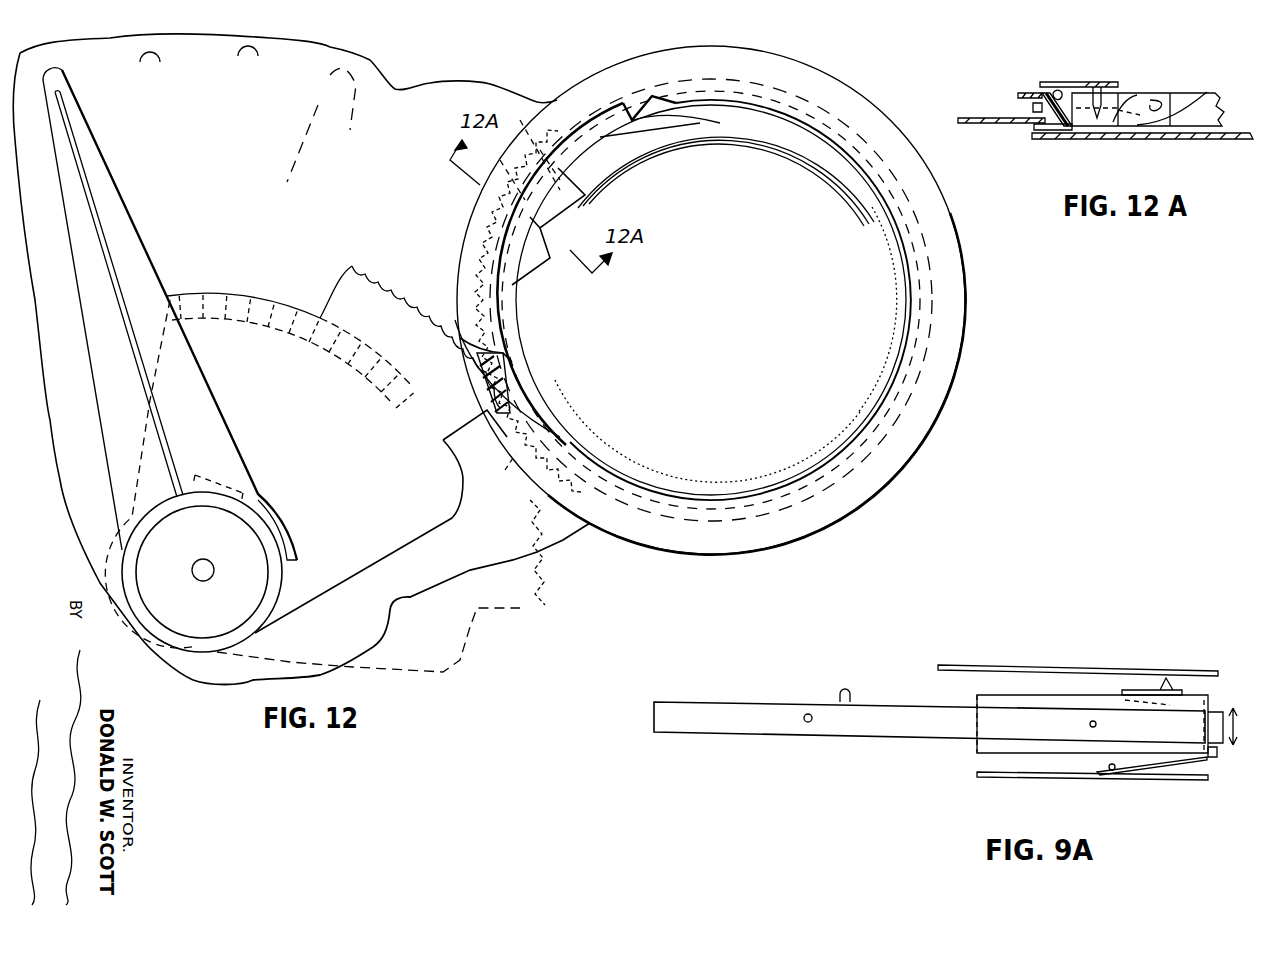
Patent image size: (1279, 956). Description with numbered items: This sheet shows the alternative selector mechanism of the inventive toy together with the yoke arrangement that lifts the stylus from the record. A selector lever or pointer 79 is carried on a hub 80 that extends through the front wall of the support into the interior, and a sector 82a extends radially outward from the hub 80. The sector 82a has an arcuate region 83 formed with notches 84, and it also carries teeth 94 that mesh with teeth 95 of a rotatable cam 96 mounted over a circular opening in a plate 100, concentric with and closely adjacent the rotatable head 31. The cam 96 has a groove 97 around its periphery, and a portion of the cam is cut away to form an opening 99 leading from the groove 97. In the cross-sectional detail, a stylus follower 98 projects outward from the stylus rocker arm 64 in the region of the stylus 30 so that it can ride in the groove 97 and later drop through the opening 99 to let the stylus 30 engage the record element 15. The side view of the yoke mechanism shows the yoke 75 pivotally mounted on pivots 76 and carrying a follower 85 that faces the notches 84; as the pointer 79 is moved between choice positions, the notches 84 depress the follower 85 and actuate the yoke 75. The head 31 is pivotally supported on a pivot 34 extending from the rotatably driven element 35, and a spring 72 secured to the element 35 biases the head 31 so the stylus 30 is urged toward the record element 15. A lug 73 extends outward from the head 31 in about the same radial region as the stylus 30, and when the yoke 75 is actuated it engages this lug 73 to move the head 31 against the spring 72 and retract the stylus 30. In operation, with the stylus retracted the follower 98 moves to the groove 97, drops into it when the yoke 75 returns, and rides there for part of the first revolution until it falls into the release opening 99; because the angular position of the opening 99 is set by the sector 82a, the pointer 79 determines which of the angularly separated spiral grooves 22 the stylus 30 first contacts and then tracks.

In FIG. 12, the plate 100 is at (375, 80).
In FIG. 12A, the plate 100 is at (995, 124).
In FIG. 12, the selector lever or pointer 79 is at (140, 268).
In FIG. 12, the hub 80 is at (205, 578).
In FIG. 12, the arcuate region 83 is at (262, 300).
In FIG. 12, the notches 84 is at (300, 345).
In FIG. 12, the teeth 94 is at (385, 290).
In FIG. 12, the sector 82a is at (376, 509).
In FIG. 12, the groove 97 is at (510, 366).
In FIG. 12A, the groove 97 is at (1047, 93).
In FIG. 12, the rotatable cam 96 is at (613, 82).
In FIG. 12A, the rotatable cam 96 is at (1058, 131).
In FIG. 12, the opening or release region 99 is at (648, 92).
In FIG. 12A, the opening or release region 99 is at (1194, 100).
In FIG. 12, the spiral grooves 22 is at (870, 236).
In FIG. 12, the stylus follower 98 is at (512, 158).
In FIG. 12A, the stylus follower 98 is at (1060, 92).
In FIG. 12, the stylus 30 is at (556, 190).
In FIG. 12A, the stylus 30 is at (1125, 99).
In FIG. 9A, the stylus 30 is at (1168, 685).
In FIG. 12, the stylus rocker arm 64 is at (530, 258).
In FIG. 12A, the stylus rocker arm 64 is at (1100, 82).
In FIG. 12, the teeth 95 is at (502, 474).
In FIG. 12A, the teeth 95 is at (1033, 107).
In FIG. 12A, the record element 15 is at (1105, 140).
In FIG. 9A, the record element 15 is at (1115, 665).
In FIG. 9A, the yoke 75 is at (905, 736).
In FIG. 9A, the follower 85 is at (846, 692).
In FIG. 9A, the pivots 76 is at (806, 722).
In FIG. 9A, the rotatable head 31 is at (1212, 712).
In FIG. 9A, the pivot 34 is at (1090, 724).
In FIG. 9A, the rotatably driven element 35 is at (1020, 778).
In FIG. 9A, the spring 72 is at (1170, 775).
In FIG. 9A, the lug 73 is at (1217, 755).